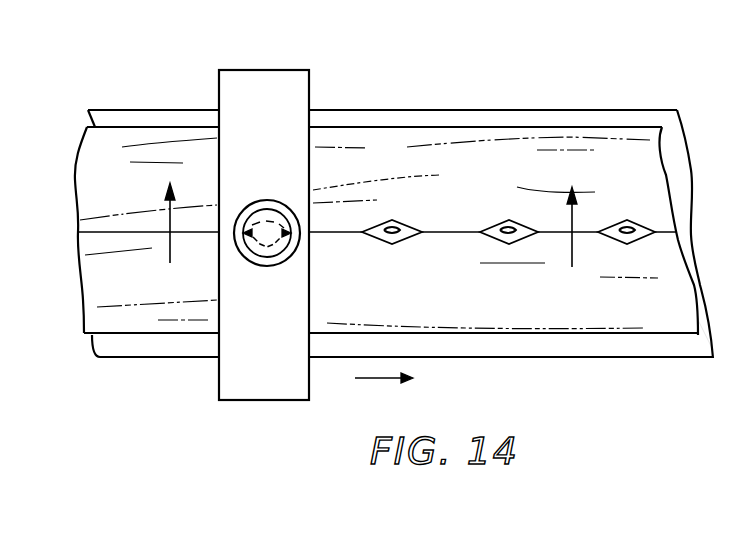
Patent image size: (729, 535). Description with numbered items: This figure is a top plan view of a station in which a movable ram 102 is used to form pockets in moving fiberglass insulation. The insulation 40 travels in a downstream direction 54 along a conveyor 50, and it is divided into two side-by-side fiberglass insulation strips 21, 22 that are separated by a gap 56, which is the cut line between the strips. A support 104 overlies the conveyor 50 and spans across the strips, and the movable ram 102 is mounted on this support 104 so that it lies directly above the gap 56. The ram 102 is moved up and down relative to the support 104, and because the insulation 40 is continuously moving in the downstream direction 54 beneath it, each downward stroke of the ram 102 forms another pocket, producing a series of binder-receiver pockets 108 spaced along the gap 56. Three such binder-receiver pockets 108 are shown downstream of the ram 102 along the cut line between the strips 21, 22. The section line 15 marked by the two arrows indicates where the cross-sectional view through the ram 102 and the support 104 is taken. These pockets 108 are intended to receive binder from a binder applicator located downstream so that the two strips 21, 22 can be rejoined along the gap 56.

The insulation 40 is at (442, 140).
The fiberglass insulation strip 22 is at (130, 140).
The fiberglass insulation strip 21 is at (137, 318).
The gap 56 is at (115, 232).
The conveyor 50 is at (690, 253).
The support 104 is at (278, 104).
The movable ram 102 is at (277, 205).
The binder-receiver pockets 108 is at (400, 228).
The downstream direction 54 is at (377, 378).
The section line 15 is at (365, 244).